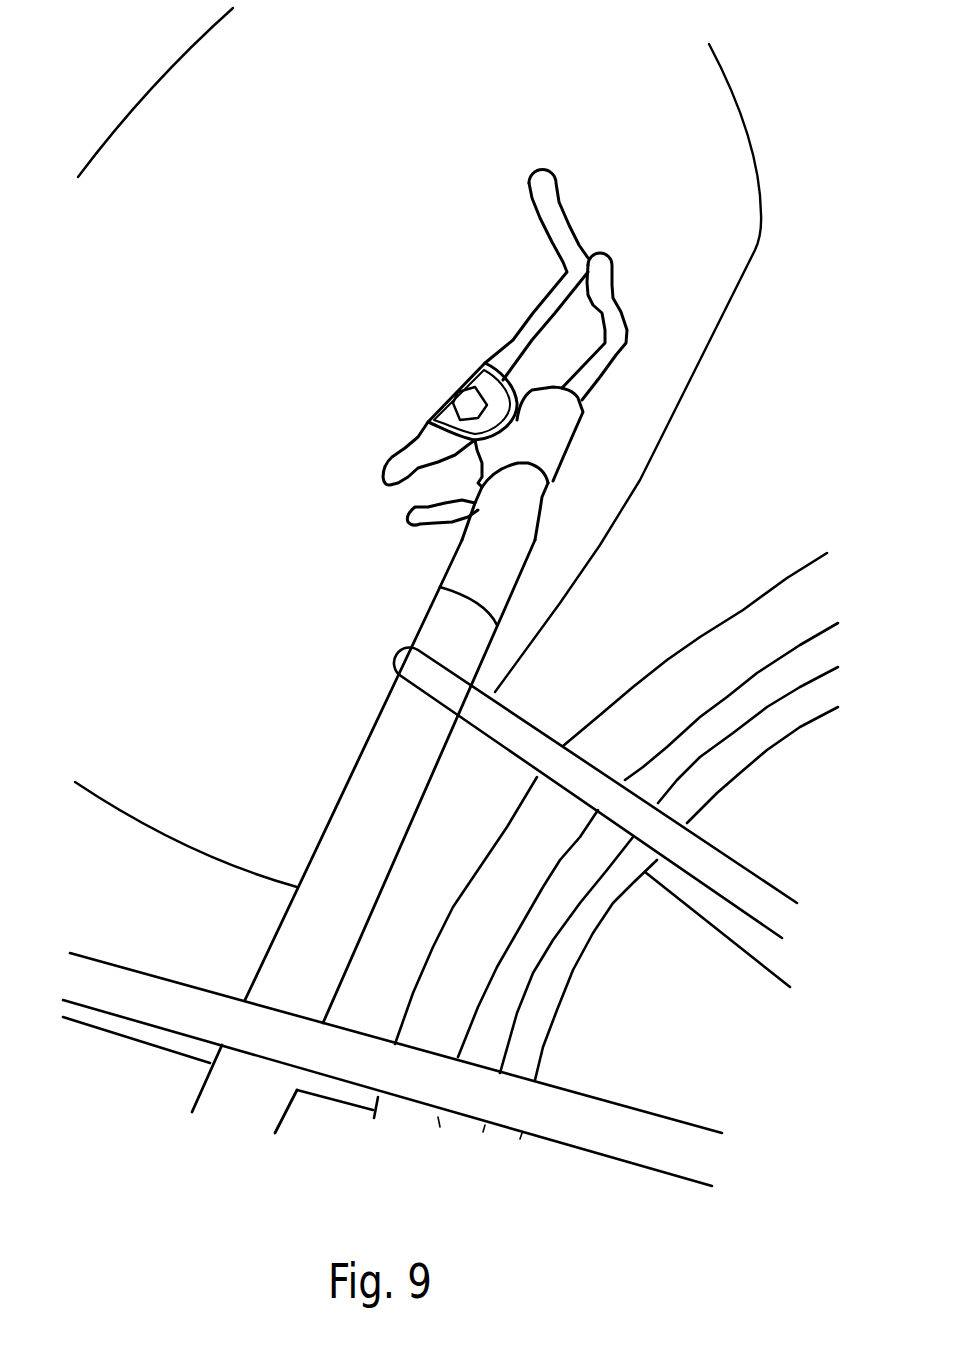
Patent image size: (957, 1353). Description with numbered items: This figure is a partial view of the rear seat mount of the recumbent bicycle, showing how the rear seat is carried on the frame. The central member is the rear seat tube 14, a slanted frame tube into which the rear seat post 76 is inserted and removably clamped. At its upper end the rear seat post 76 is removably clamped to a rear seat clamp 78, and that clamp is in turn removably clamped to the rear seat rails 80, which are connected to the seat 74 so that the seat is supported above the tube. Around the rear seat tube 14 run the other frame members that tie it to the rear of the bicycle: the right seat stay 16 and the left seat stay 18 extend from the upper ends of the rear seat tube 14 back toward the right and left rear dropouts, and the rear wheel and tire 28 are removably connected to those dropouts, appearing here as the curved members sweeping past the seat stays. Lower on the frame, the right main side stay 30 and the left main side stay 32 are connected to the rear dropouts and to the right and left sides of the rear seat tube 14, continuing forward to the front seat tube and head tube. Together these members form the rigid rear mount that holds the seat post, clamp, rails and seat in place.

The rear seat tube 14 is at (499, 627).
The right seat stay 16 is at (498, 743).
The left seat stay 18 is at (555, 730).
The rear wheel and tire 28 is at (807, 562).
The right main side stay 30 is at (330, 1105).
The left main side stay 32 is at (358, 1093).
The seat 74 is at (757, 257).
The rear seat post 76 is at (543, 532).
The rear seat clamp 78 is at (574, 447).
The rear seat rails 80 is at (598, 385).